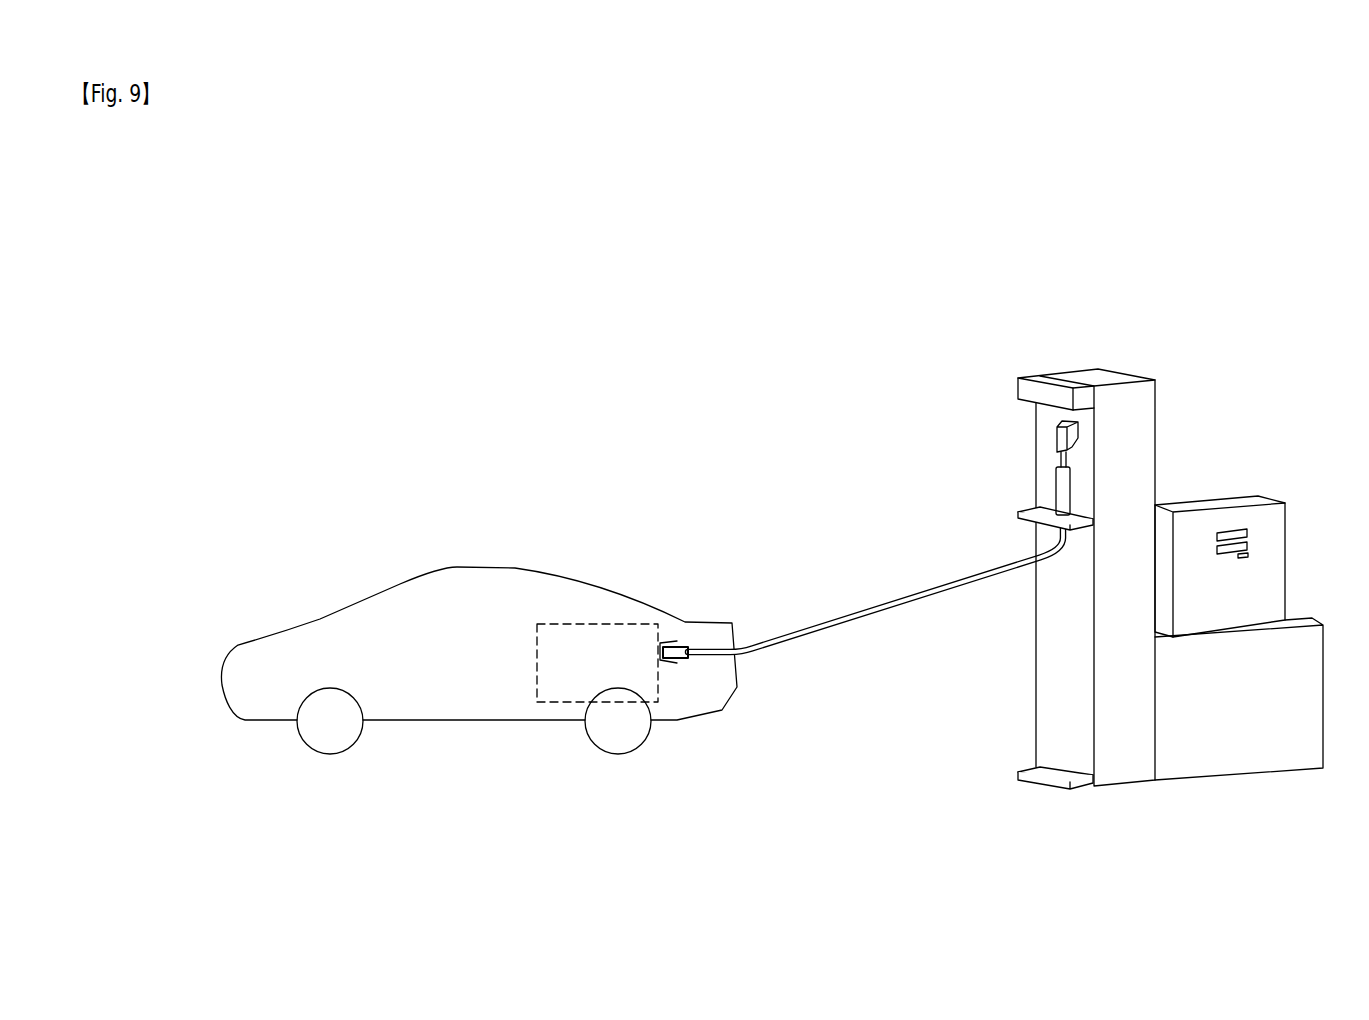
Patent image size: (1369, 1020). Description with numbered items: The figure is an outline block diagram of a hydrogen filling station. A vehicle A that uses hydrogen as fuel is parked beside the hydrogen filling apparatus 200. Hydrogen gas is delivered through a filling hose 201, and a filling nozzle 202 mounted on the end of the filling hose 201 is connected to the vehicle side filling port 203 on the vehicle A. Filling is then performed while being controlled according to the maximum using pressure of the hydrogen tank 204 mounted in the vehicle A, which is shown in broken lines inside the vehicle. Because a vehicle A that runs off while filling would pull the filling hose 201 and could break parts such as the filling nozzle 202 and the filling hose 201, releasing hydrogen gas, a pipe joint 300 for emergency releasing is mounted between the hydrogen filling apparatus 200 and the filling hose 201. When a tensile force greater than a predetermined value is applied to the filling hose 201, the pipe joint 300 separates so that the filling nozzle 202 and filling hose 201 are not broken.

The vehicle A is at (515, 568).
The hydrogen filling apparatus 200 is at (1185, 355).
The filling hose 201 is at (877, 607).
The filling nozzle 202 is at (681, 646).
The vehicle side filling port 203 is at (664, 661).
The hydrogen tank 204 is at (549, 702).
The pipe joint for emergency releasing 300 is at (1060, 438).